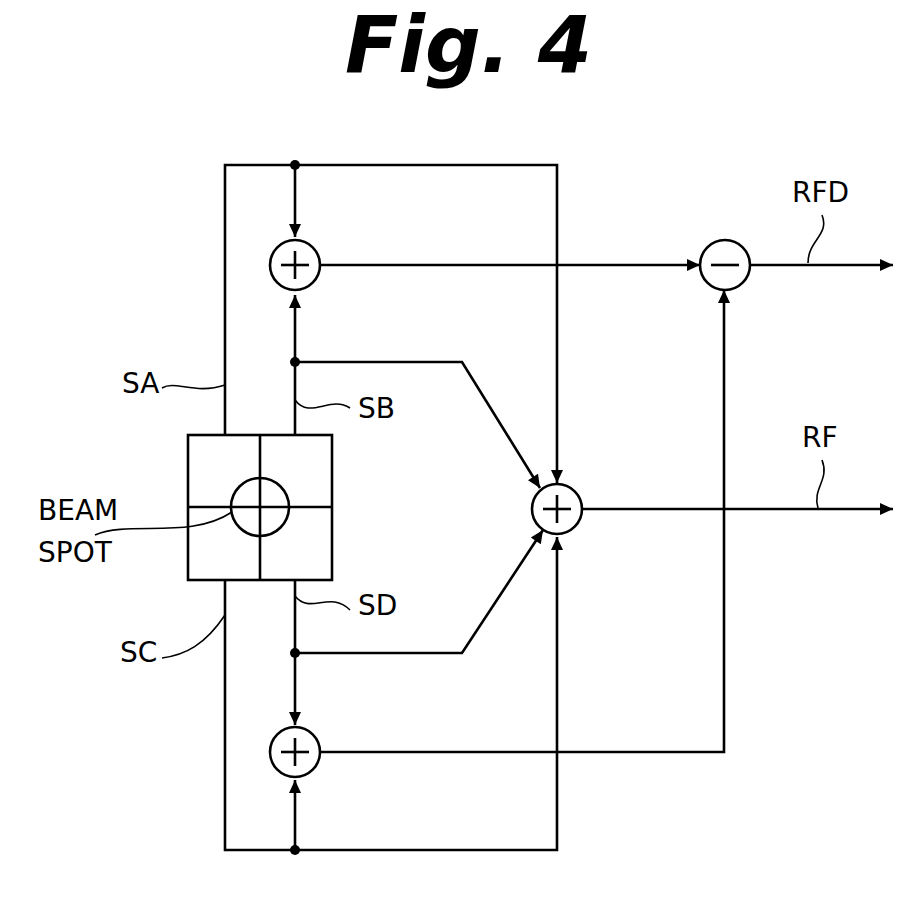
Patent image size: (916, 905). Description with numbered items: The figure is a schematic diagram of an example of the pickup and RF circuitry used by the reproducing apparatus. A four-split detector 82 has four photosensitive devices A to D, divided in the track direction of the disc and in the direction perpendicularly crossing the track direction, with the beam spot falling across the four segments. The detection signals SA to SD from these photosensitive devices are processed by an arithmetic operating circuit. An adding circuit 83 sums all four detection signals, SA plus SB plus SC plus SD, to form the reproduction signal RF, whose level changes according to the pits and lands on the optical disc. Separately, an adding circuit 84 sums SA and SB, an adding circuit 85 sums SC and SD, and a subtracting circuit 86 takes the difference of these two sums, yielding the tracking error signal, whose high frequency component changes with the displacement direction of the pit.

The 4-split detector 82 is at (188, 480).
The adding circuit 83 is at (580, 490).
The adding circuit 84 is at (312, 247).
The adding circuit 85 is at (312, 770).
The subtracting circuit 86 is at (722, 240).